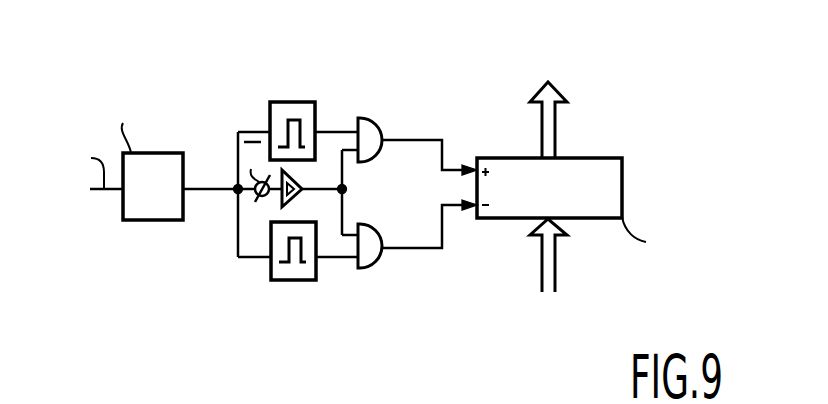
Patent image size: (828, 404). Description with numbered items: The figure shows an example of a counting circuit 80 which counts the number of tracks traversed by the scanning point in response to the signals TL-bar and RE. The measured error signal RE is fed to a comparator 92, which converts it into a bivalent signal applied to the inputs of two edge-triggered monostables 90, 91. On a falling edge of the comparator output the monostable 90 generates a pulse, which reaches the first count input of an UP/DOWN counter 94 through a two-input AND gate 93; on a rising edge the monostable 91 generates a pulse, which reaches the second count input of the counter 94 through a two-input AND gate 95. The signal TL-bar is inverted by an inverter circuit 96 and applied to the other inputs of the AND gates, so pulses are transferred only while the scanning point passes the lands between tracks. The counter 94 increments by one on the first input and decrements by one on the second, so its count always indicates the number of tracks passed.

The counting circuit 80 is at (460, 58).
The edge-triggered monostable 90 is at (305, 110).
The edge-triggered monostable 91 is at (305, 272).
The comparator 92 is at (168, 210).
The two-input AND gate 93 is at (375, 157).
The UP/DOWN counter 94 is at (603, 182).
The two-input AND gate 95 is at (377, 260).
The inverter circuit 96 is at (298, 193).